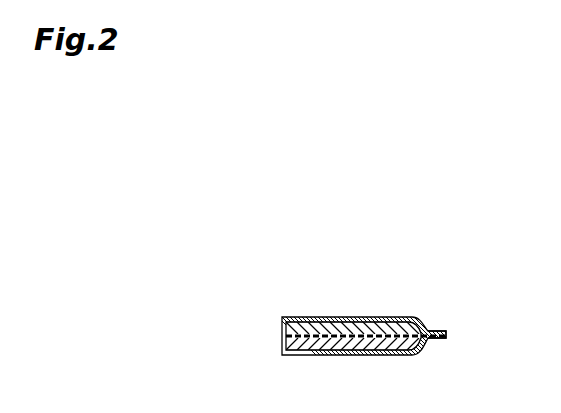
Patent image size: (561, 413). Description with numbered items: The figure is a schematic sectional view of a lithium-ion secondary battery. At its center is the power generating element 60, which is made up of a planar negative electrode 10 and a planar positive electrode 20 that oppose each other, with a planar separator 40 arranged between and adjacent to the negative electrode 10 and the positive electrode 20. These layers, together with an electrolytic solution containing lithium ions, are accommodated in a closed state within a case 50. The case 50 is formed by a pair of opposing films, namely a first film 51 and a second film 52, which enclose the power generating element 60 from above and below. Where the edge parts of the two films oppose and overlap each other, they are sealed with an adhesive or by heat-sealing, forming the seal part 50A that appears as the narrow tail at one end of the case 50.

The negative electrode 10 is at (287, 325).
The positive electrode 20 is at (287, 346).
The separator 40 is at (286, 336).
The case 50 is at (396, 277).
The first film 51 is at (343, 317).
The second film 52 is at (368, 348).
The seal part 50A is at (437, 331).
The power generating element 60 is at (231, 298).